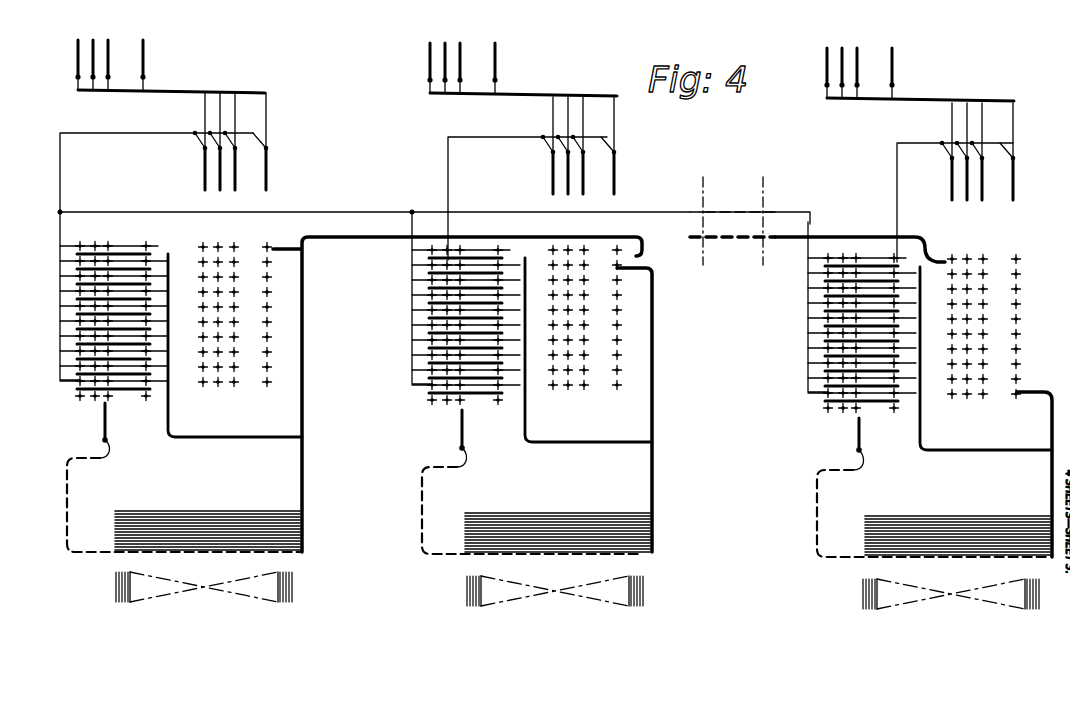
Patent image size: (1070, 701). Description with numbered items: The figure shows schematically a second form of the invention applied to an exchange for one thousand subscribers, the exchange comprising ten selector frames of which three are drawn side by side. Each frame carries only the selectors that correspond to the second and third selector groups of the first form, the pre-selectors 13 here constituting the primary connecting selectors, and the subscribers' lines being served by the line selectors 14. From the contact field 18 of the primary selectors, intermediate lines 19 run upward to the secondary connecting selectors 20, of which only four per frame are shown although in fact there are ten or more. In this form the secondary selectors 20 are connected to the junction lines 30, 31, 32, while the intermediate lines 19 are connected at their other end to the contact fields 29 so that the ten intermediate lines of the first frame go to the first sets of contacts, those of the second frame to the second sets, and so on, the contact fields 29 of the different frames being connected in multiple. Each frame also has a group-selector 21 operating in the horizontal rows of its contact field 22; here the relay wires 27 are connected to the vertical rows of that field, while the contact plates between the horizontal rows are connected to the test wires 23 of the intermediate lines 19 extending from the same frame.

The pre-selector 13 is at (113, 586).
The line selector 14 is at (108, 60).
The contact field 18 is at (115, 524).
The intermediate line 19 is at (302, 380).
The secondary connecting selector 20 is at (235, 172).
The group-selector 21 is at (107, 428).
The contact field 22 is at (541, 311).
The test wire 23 is at (227, 437).
The relay wire 27 is at (60, 195).
The contact field 29 is at (203, 386).
The junction line 30 is at (235, 115).
The junction line 31 is at (587, 123).
The junction line 32 is at (986, 125).